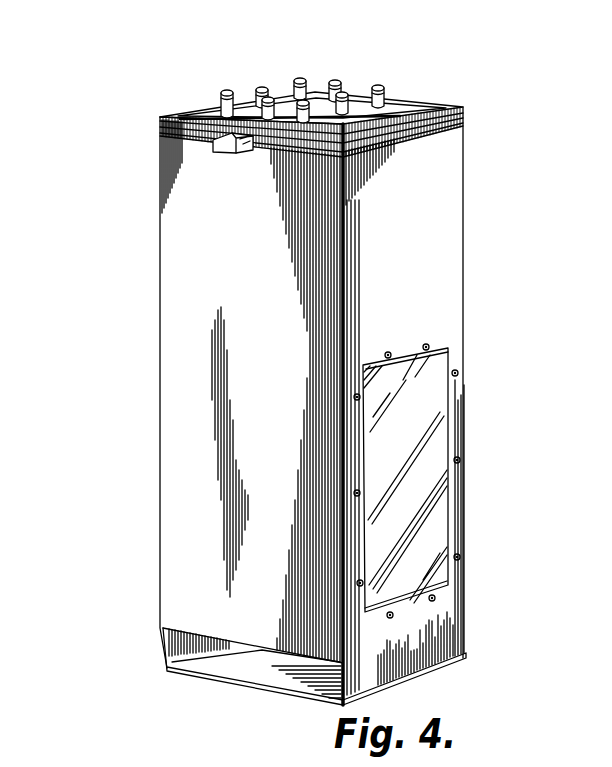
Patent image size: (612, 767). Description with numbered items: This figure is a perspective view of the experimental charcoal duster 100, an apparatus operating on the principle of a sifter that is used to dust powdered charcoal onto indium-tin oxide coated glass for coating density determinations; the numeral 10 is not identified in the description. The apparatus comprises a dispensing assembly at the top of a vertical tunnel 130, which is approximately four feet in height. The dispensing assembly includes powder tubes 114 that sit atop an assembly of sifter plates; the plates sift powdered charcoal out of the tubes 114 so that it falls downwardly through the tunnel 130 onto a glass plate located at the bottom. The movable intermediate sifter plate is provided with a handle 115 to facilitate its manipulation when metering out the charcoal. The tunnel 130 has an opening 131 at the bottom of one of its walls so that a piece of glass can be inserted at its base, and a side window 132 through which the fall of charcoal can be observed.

The housing cabinet 10 is at (420, 97).
The charcoal duster 100 is at (140, 126).
The powder tubes 114 is at (330, 74).
The handle 115 is at (205, 140).
The vertical tunnel 130 is at (197, 423).
The opening 131 is at (235, 662).
The side window 132 is at (437, 457).